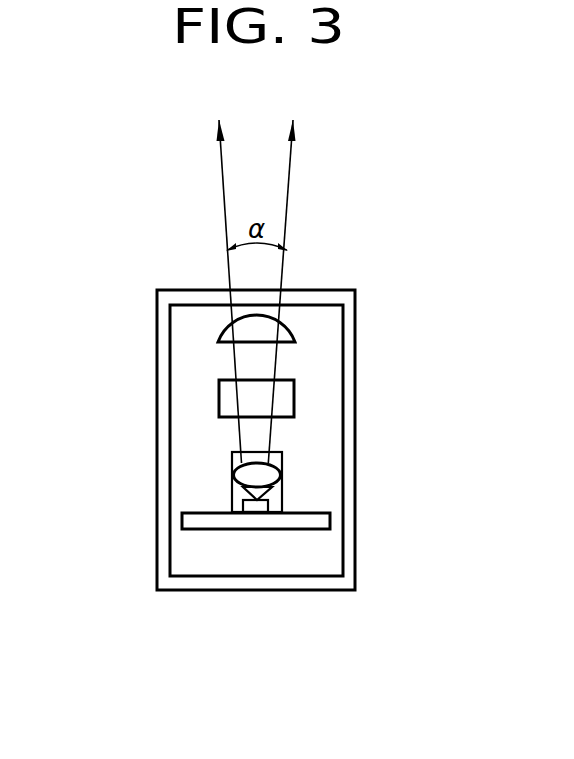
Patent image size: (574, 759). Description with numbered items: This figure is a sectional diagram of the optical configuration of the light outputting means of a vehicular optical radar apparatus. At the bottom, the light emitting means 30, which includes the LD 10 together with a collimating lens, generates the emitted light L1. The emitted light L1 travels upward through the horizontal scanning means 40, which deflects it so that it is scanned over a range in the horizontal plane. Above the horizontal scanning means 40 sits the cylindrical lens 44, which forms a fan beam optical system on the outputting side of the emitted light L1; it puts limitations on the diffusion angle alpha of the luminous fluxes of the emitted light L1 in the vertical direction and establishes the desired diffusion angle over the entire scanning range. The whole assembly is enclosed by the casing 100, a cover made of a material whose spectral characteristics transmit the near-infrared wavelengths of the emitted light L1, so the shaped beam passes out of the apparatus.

The casing 100 is at (355, 545).
The cylindrical lens 44 is at (293, 323).
The horizontal scanning means 40 is at (294, 398).
The light emitting means 30 is at (282, 463).
The LD 10 is at (268, 503).
The emitted light L1 is at (222, 207).